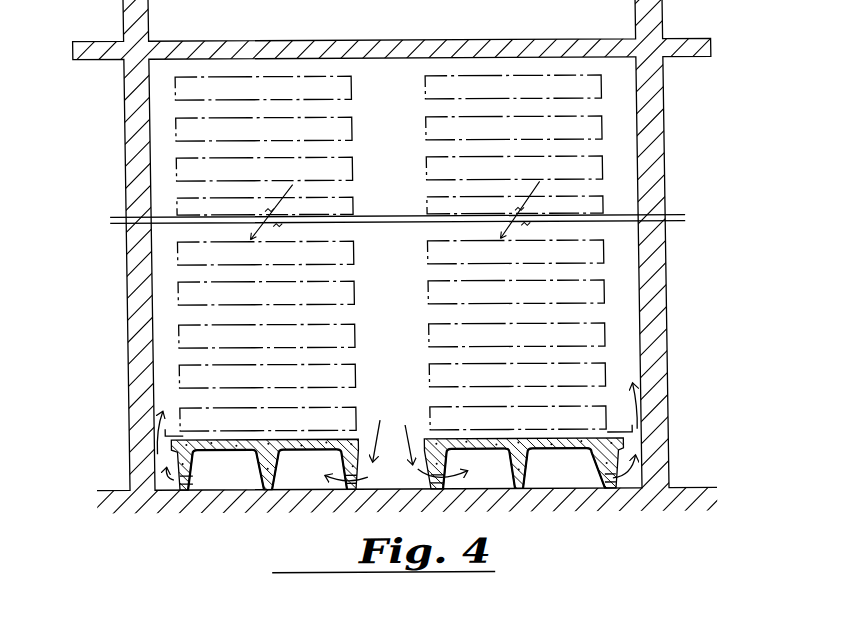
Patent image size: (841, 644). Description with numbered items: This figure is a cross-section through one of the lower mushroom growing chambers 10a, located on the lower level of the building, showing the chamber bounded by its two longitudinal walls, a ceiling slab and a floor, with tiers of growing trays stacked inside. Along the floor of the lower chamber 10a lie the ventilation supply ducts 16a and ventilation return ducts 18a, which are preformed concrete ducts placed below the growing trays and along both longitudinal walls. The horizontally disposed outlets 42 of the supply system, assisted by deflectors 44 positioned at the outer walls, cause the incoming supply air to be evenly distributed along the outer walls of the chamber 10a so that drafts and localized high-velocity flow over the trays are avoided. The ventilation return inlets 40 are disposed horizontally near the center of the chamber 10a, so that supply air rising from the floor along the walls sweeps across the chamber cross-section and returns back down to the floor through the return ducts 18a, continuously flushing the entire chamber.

The lower chamber 10a is at (621, 147).
The ventilation supply duct 16a is at (227, 462).
The ventilation return duct 18a is at (461, 457).
The inlet 40 is at (343, 492).
The outlet 42 is at (206, 480).
The deflector 44 is at (161, 443).